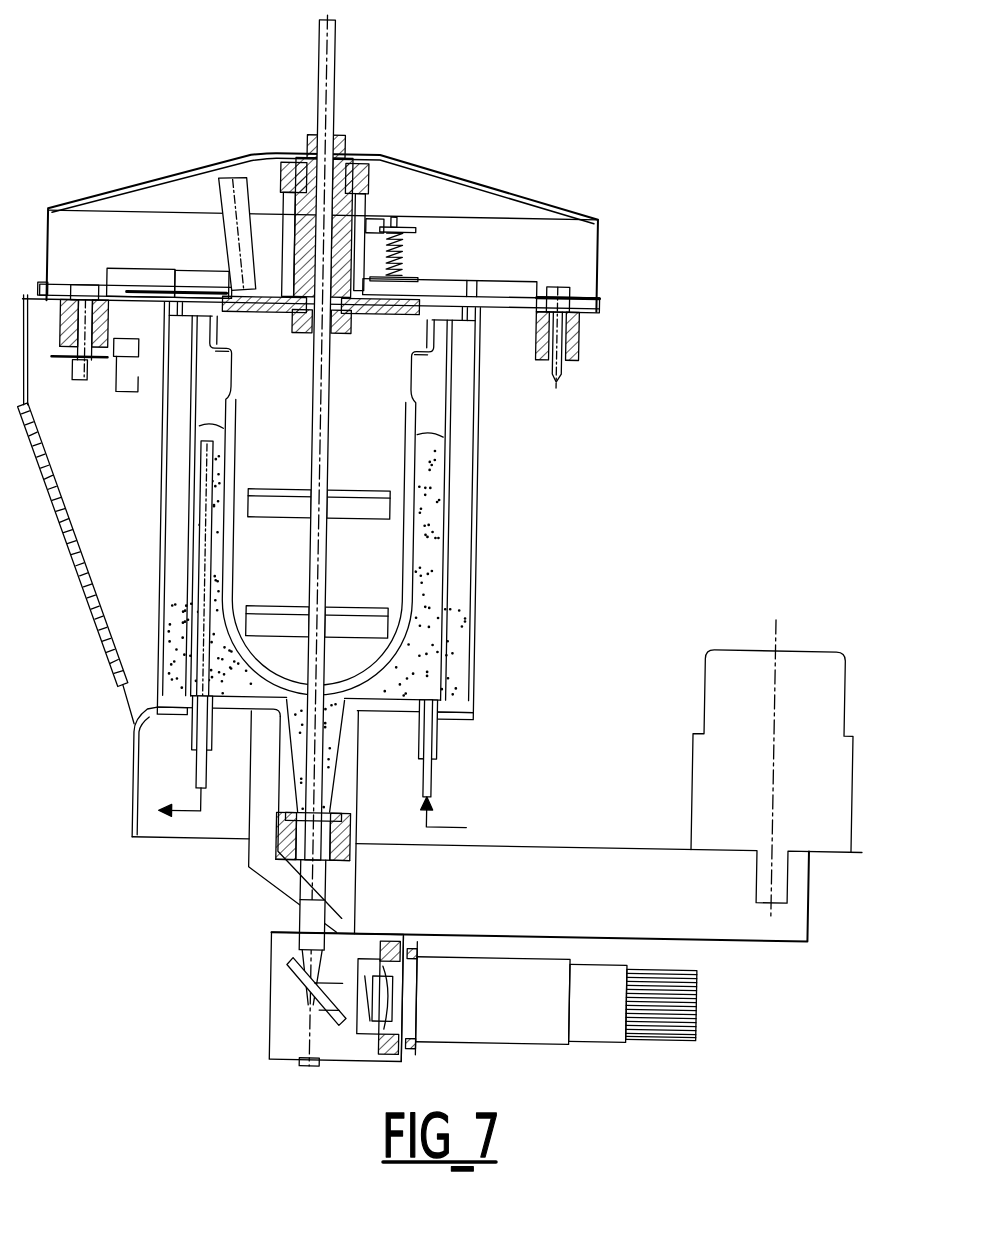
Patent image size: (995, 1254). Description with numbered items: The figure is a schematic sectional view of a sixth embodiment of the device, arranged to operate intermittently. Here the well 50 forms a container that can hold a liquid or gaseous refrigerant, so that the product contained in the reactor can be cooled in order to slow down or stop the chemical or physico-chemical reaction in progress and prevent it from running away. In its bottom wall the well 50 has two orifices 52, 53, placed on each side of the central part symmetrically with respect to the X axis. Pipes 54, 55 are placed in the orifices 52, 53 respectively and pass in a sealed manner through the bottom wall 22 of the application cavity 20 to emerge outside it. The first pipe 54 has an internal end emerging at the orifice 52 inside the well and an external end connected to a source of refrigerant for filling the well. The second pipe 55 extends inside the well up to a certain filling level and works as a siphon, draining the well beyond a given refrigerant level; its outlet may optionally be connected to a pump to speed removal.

The application cavity 20 is at (460, 660).
The bottom wall 22 is at (463, 738).
The well 50 is at (441, 570).
The orifice 52 is at (440, 698).
The orifice 53 is at (232, 692).
The first pipe 54 is at (441, 764).
The second pipe 55 is at (234, 694).